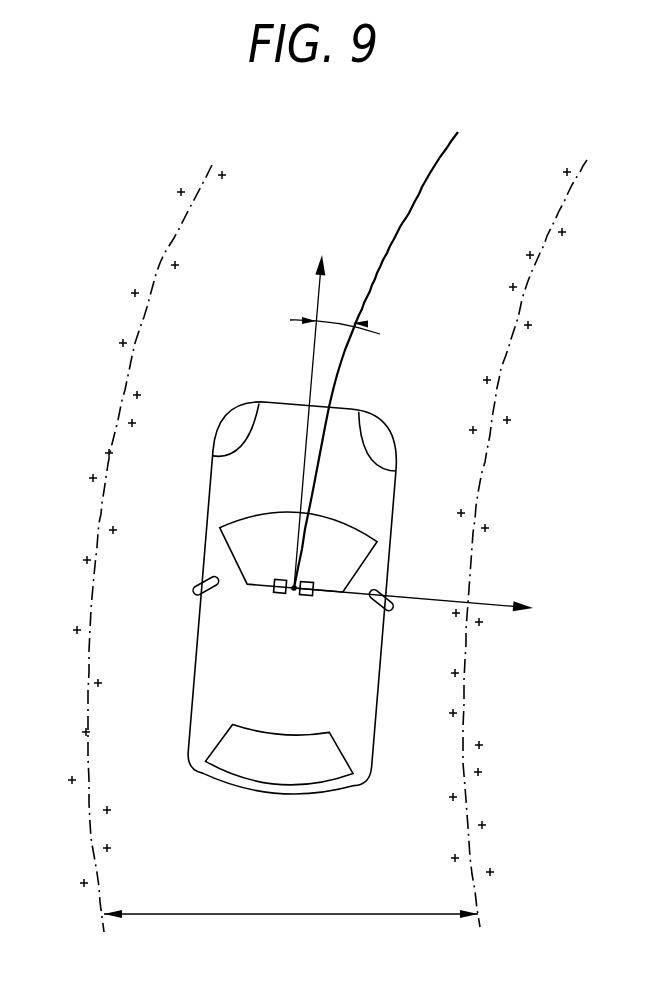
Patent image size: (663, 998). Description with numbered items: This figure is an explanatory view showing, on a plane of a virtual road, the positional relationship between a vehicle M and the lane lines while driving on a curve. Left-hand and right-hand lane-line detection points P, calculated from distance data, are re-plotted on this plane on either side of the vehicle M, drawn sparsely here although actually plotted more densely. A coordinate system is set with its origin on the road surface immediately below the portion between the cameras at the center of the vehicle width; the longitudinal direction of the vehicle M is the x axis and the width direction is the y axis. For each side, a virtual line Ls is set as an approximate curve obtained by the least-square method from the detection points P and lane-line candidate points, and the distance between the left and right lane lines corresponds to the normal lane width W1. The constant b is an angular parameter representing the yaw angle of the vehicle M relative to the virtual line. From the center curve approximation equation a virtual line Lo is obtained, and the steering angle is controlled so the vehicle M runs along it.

The virtual line Ls is at (126, 356).
The virtual line Lo is at (390, 245).
The lane-line detection point P is at (93, 887).
The vehicle M is at (377, 720).
The normal lane width W1 is at (291, 900).
The angular parameter b is at (335, 314).
The x axis x is at (311, 408).
The y axis y is at (423, 605).